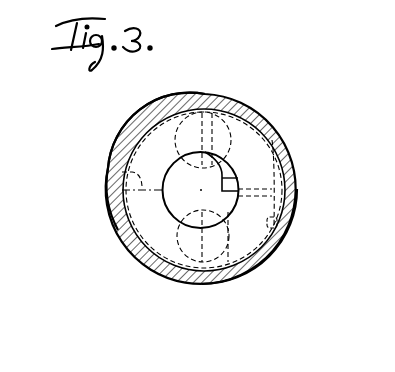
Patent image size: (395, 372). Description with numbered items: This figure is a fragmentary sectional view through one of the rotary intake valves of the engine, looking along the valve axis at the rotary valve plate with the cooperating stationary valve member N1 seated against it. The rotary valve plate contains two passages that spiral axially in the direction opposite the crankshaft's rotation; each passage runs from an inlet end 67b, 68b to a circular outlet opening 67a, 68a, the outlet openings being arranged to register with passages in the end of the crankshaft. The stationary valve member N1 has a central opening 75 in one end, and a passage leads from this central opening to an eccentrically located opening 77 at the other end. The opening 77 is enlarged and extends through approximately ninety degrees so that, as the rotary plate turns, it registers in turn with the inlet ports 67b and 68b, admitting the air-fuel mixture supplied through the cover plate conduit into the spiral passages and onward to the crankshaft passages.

The opening 67a is at (178, 98).
The inlet end 67b is at (110, 171).
The opening 68a is at (158, 280).
The inlet end 68b is at (293, 208).
The central opening 75 is at (226, 171).
The eccentrically located opening 77 is at (222, 177).
The axis N1 is at (250, 133).